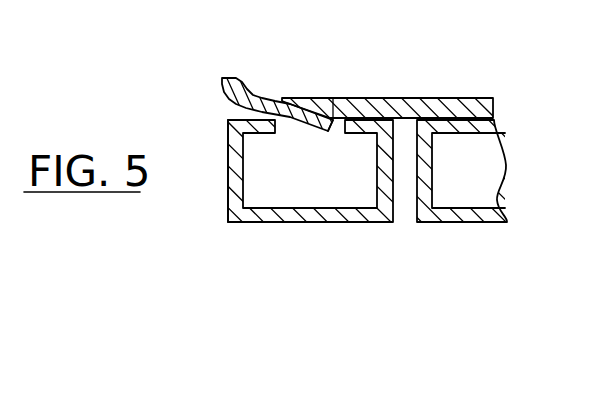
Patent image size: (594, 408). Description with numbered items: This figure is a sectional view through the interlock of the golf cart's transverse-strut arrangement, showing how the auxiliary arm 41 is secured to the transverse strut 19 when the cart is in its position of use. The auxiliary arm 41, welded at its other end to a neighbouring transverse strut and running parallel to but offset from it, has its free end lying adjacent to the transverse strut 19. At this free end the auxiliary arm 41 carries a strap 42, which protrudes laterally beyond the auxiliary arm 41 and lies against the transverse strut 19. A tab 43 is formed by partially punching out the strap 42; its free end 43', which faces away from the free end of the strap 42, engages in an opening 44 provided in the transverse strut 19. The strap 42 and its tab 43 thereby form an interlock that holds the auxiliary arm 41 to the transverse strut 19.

The transverse strut 19 is at (228, 208).
The auxiliary arm 41 is at (478, 195).
The strap 42 is at (430, 98).
The tab 43 is at (280, 103).
The free end of tab 43' is at (377, 202).
The opening 44 is at (288, 128).